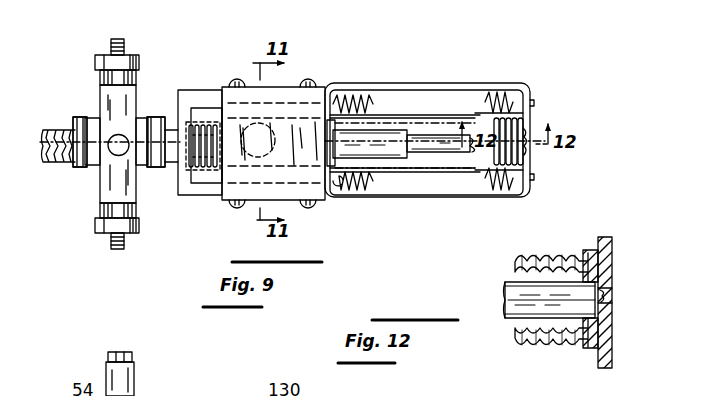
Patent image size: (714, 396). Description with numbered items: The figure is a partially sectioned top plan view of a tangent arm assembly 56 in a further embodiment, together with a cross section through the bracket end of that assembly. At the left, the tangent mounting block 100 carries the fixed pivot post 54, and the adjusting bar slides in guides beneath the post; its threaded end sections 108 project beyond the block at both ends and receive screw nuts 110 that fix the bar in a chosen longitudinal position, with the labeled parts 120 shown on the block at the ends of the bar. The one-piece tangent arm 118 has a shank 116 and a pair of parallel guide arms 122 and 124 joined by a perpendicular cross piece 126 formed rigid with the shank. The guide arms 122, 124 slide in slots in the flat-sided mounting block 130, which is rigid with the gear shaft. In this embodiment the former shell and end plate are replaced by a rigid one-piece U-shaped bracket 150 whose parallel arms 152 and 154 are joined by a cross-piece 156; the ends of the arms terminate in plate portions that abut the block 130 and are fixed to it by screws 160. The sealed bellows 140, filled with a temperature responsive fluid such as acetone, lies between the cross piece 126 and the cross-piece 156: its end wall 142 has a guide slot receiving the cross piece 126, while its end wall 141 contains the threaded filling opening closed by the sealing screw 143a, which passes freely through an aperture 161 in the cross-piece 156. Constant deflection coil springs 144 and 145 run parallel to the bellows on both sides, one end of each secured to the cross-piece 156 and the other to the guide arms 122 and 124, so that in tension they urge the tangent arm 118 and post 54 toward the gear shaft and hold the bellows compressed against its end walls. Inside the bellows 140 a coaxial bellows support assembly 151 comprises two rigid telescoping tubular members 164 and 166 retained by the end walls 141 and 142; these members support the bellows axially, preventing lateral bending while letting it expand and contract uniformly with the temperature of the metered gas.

In FIG. 9, the post 54 is at (118, 135).
In FIG. 9, the tangent arm assembly 56 is at (62, 168).
In FIG. 9, the tangent mounting block 100 is at (98, 195).
In FIG. 9, the threaded end sections 108 is at (121, 40).
In FIG. 9, the screw nuts 110 is at (103, 58).
In FIG. 9, the shank 116 is at (57, 130).
In FIG. 9, the tangent arm 118 is at (181, 89).
In FIG. 9, the port nut 120 is at (156, 117).
In FIG. 9, the guide arm 122 is at (207, 97).
In FIG. 9, the guide arm 124 is at (203, 184).
In FIG. 9, the cross piece 126 is at (185, 177).
In FIG. 9, the mounting block 130 is at (313, 117).
In FIG. 9, the bellows 140 is at (213, 140).
In FIG. 12, the bellows 140 is at (549, 257).
In FIG. 9, the end wall 141 is at (508, 141).
In FIG. 12, the end wall 141 is at (585, 252).
In FIG. 9, the end wall 142 is at (189, 124).
In FIG. 12, the screw 143a is at (612, 292).
In FIG. 9, the coil spring 144 is at (500, 90).
In FIG. 9, the coil spring 145 is at (503, 187).
In FIG. 9, the U-shaped bracket 150 is at (534, 94).
In FIG. 9, the bellows support assembly 151 is at (430, 162).
In FIG. 12, the bellows support assembly 151 is at (555, 322).
In FIG. 9, the arm 152 is at (366, 94).
In FIG. 9, the arm 154 is at (380, 196).
In FIG. 9, the cross-piece 156 is at (531, 168).
In FIG. 12, the cross-piece 156 is at (612, 252).
In FIG. 9, the screws 160 is at (309, 85).
In FIG. 9, the aperture 161 is at (534, 130).
In FIG. 12, the aperture 161 is at (612, 310).
In FIG. 9, the telescoping tubular member 164 is at (392, 137).
In FIG. 9, the telescoping tubular member 166 is at (459, 154).